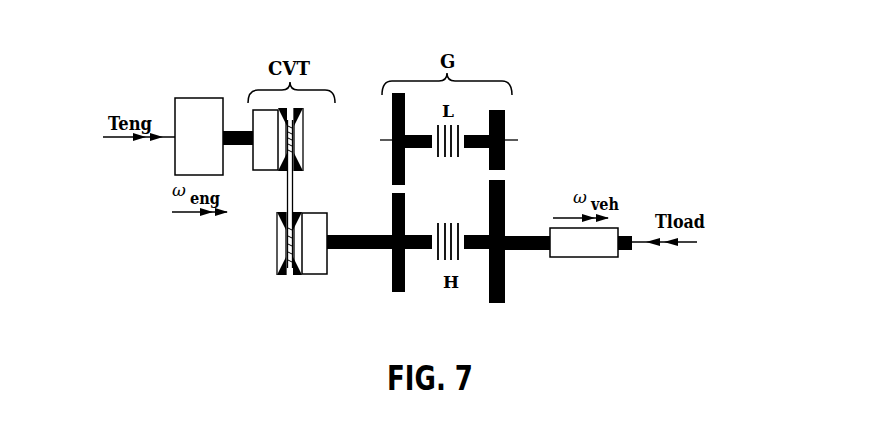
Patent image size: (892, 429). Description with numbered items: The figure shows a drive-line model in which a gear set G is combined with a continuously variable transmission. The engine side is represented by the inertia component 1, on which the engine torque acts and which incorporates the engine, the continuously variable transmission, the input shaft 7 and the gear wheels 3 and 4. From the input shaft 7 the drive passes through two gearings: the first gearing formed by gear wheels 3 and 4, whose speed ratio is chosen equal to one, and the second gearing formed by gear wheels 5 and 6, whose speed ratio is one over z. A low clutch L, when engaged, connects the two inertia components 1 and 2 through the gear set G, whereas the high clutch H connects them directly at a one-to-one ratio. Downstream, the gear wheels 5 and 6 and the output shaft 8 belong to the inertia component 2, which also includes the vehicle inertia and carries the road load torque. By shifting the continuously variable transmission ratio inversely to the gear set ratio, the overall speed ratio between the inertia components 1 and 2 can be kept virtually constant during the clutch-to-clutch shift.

The inertia component 1 is at (199, 136).
The inertia component 2 is at (584, 243).
The gear wheel 3 is at (395, 273).
The gear wheel 4 is at (392, 137).
The gear wheel 5 is at (505, 127).
The gear wheel 6 is at (505, 273).
The input shaft 7 is at (347, 249).
The output shaft 8 is at (510, 235).